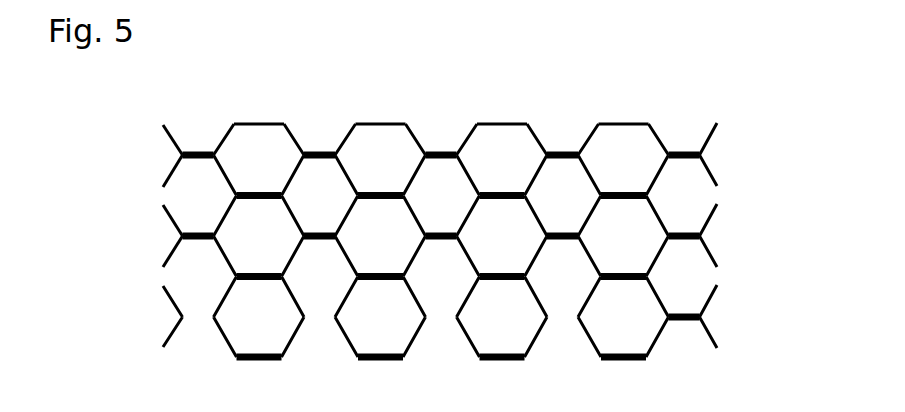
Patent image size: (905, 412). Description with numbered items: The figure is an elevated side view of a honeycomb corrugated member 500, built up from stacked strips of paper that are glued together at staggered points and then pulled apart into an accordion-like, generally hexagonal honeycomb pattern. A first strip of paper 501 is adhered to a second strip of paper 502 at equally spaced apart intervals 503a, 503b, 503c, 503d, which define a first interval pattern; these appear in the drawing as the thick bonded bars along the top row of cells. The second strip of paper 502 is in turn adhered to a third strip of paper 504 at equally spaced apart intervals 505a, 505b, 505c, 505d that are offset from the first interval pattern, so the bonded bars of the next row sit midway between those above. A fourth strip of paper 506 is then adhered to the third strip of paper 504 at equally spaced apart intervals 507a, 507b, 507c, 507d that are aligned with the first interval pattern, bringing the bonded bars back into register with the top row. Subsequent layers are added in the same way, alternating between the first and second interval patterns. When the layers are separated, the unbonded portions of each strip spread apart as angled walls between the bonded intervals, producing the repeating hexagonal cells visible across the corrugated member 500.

The honeycomb corrugated member 500 is at (155, 112).
The first strip of paper 501 is at (173, 140).
The second strip of paper 502 is at (173, 175).
The third strip of paper 504 is at (168, 213).
The fourth strip of paper 506 is at (173, 252).
The adhesion interval 503a is at (190, 148).
The adhesion interval 503b is at (322, 150).
The adhesion interval 503c is at (443, 150).
The adhesion interval 503d is at (558, 150).
The adhesion interval 505a is at (267, 192).
The adhesion interval 505b is at (372, 190).
The adhesion interval 505c is at (503, 190).
The adhesion interval 505d is at (630, 190).
The adhesion interval 507a is at (203, 232).
The adhesion interval 507b is at (327, 232).
The adhesion interval 507c is at (443, 232).
The adhesion interval 507d is at (565, 232).